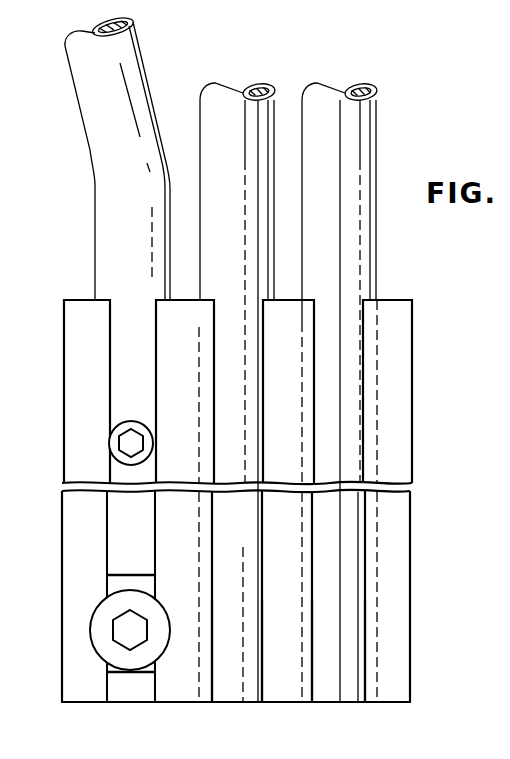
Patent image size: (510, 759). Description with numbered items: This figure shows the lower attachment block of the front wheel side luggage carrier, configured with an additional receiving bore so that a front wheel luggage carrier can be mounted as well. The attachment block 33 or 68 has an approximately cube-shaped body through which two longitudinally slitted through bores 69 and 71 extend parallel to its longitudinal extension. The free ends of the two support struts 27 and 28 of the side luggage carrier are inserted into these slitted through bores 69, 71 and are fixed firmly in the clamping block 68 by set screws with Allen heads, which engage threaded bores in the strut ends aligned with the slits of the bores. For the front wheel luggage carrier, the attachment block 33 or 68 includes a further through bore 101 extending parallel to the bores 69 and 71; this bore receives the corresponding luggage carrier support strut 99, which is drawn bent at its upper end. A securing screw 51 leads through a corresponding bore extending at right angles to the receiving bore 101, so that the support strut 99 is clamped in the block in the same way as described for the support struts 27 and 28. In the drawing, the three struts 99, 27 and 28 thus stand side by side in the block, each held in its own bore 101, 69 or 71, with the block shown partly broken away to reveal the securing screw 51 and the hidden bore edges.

The support strut 99 is at (90, 100).
The support strut 27 is at (248, 96).
The support strut 28 is at (350, 96).
The attachment block 33 is at (279, 501).
The attachment block 68 is at (407, 375).
The securing screw 51 is at (102, 633).
The through bore 101 is at (125, 688).
The through bore 69 is at (230, 687).
The through bore 71 is at (347, 685).